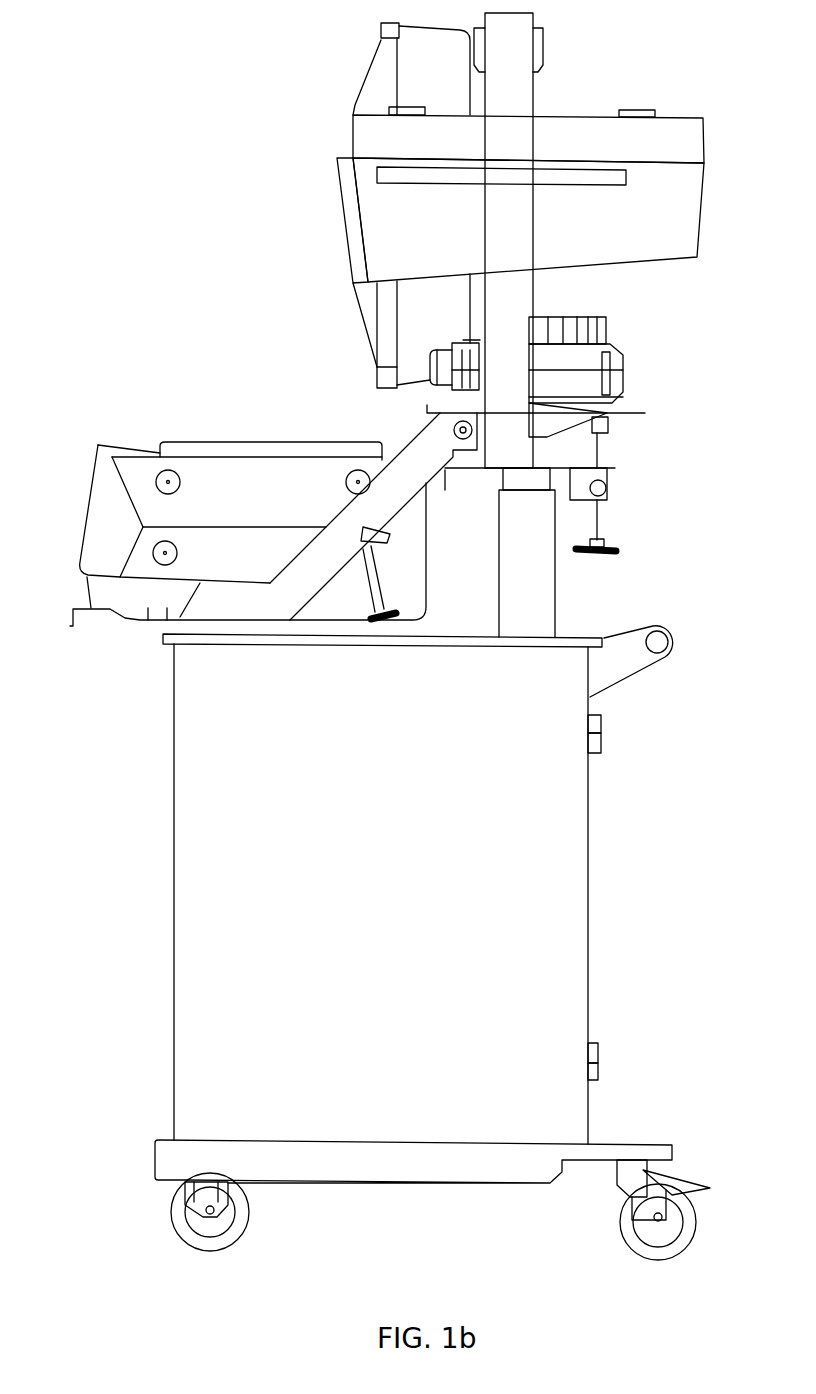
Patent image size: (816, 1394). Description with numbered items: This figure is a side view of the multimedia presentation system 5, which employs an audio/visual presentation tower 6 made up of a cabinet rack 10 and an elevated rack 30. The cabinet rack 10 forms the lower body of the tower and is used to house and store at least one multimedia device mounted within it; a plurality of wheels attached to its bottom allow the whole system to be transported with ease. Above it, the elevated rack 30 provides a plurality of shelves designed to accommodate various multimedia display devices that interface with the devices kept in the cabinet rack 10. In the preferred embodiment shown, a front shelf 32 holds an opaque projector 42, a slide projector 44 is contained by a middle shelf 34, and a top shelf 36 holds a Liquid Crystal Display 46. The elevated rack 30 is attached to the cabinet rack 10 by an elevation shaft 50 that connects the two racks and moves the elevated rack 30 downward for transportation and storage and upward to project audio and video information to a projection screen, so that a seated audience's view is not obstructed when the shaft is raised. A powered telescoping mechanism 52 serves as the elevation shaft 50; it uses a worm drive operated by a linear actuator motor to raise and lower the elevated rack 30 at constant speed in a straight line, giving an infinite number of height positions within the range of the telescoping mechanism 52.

The multimedia presentation system 5 is at (145, 141).
The audio/visual presentation tower 6 is at (521, 206).
The cabinet rack 10 is at (410, 861).
The elevated rack 30 is at (515, 298).
The front shelf 32 is at (72, 624).
The middle shelf 34 is at (645, 414).
The top shelf 36 is at (700, 118).
The opaque projector 42 is at (88, 487).
The slide projector 44 is at (606, 329).
The Liquid Crystal Display (LCD) 46 is at (342, 210).
The elevation shaft 50 is at (528, 603).
The telescoping mechanism 52 is at (530, 490).